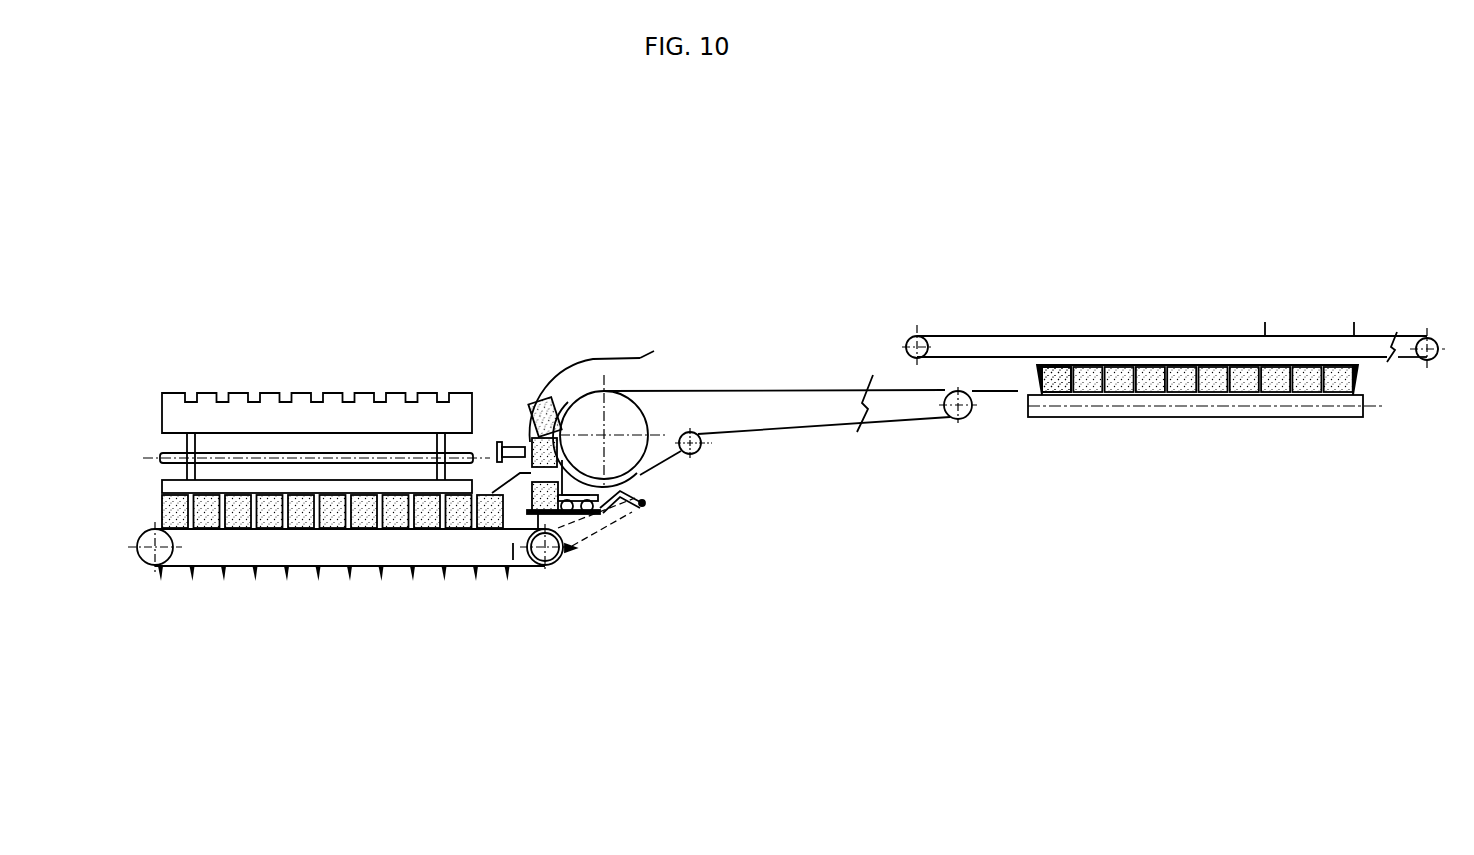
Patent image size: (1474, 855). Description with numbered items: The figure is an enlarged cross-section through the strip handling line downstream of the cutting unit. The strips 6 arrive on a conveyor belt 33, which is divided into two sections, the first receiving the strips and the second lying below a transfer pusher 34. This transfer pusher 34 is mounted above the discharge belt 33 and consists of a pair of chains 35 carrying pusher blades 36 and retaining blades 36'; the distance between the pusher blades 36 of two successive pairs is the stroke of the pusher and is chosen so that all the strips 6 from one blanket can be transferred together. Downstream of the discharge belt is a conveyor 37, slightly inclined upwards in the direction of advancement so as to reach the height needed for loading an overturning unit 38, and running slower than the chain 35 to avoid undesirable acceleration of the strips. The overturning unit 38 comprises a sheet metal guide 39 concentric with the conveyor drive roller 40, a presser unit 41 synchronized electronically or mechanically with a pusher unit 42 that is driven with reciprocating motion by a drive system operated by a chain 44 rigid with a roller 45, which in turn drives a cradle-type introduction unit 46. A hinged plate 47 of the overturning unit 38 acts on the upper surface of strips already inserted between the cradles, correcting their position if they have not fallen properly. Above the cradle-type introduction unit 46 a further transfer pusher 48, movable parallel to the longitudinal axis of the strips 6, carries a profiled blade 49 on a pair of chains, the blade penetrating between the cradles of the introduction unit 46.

The strips 6 is at (1335, 385).
The conveyor belt 33 is at (1160, 412).
The transfer pusher 34 is at (1185, 336).
The chains 35 is at (951, 376).
The pusher blades 36 is at (1250, 419).
The retaining blades 36' is at (1019, 434).
The conveyor 37 is at (907, 410).
The overturning unit 38 is at (593, 357).
The sheet metal guide 39 is at (640, 357).
The conveyor drive roller 40 is at (647, 480).
The presser unit 41 is at (510, 447).
The pusher unit 42 is at (588, 514).
The chain 44 is at (628, 517).
The roller 45 is at (550, 563).
The cradle-type introduction unit 46 is at (312, 568).
The hinged plate 47 is at (492, 490).
The transfer pusher 48 is at (203, 403).
The profiled blade 49 is at (173, 487).